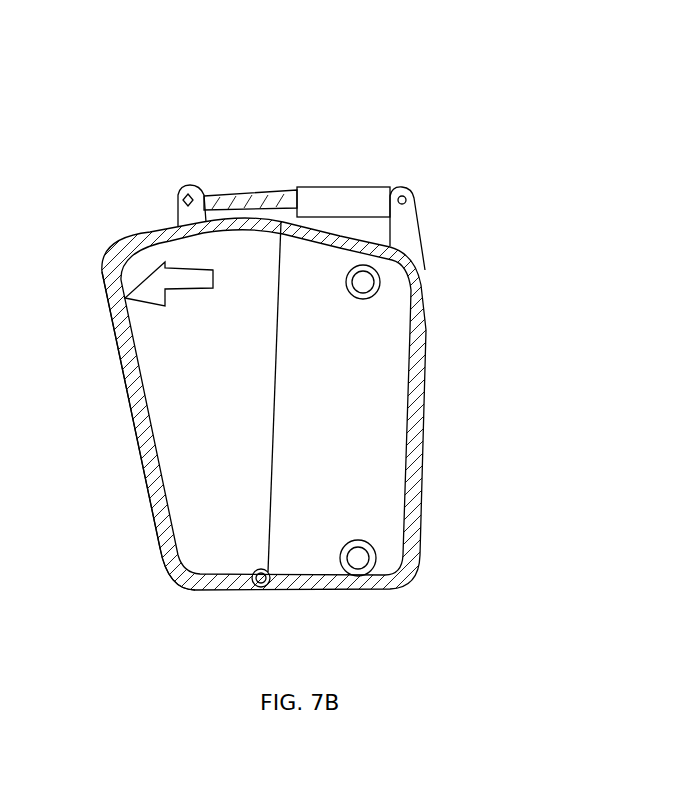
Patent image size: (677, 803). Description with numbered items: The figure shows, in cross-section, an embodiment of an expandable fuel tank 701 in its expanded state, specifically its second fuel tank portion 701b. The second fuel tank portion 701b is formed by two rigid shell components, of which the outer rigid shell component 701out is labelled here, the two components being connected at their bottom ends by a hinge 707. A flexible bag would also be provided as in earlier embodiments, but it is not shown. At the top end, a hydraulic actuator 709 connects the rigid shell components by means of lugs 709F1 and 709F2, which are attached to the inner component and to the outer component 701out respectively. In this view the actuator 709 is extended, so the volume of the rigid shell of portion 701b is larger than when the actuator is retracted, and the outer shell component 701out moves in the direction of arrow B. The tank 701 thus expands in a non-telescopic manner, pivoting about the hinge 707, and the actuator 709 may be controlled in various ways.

The frame 701 is at (428, 328).
The outer rigid shell component 701out is at (100, 262).
The second fuel tank portion 701b is at (130, 553).
The hinge 707 is at (258, 588).
The hydraulic actuator 709 is at (347, 187).
The lug 709F2 is at (193, 185).
The lug 709F1 is at (405, 233).
The arrow B is at (190, 280).